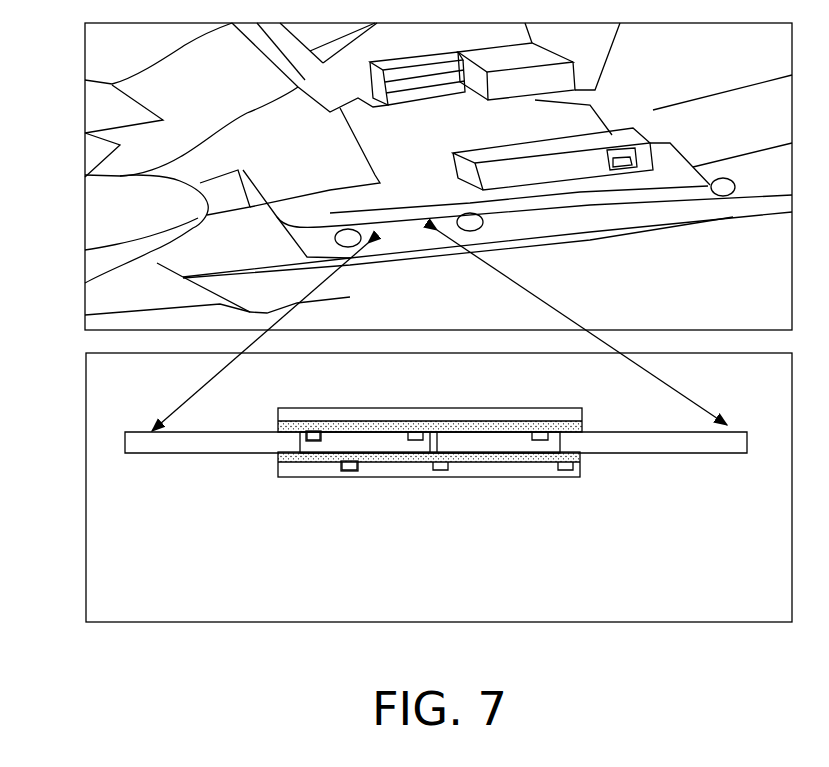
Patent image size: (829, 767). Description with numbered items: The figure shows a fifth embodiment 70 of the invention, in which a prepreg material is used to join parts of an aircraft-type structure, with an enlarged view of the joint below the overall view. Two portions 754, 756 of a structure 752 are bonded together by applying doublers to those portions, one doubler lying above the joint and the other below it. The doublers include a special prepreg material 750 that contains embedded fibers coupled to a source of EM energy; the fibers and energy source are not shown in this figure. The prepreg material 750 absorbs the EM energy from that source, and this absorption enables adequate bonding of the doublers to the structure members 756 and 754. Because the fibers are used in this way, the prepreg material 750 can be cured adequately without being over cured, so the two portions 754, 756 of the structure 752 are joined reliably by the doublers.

The fifth embodiment 70 is at (43, 370).
The prepreg material 750 is at (350, 460).
The structure 752 is at (428, 510).
The portion of structure 754 is at (677, 443).
The portion of structure 756 is at (142, 443).